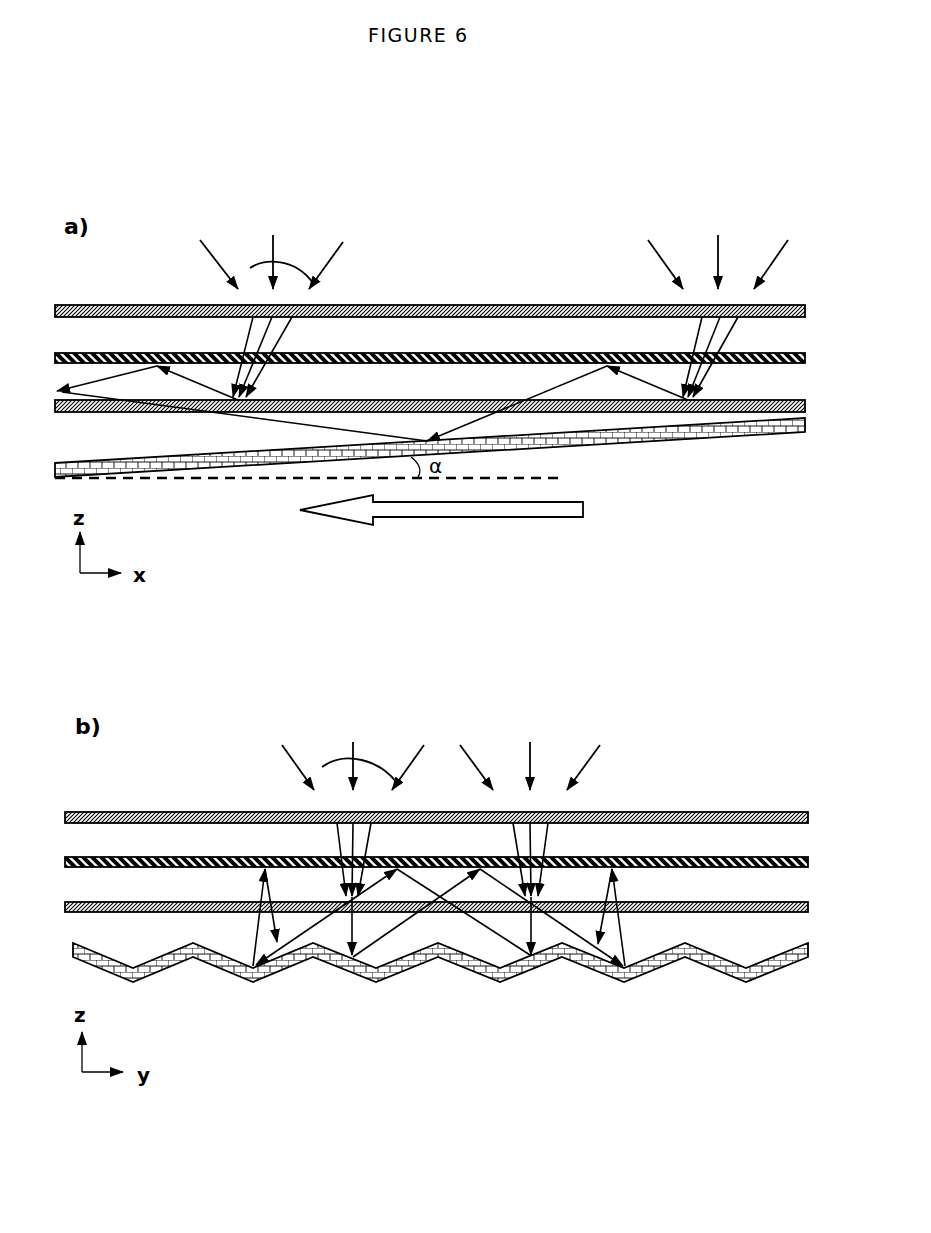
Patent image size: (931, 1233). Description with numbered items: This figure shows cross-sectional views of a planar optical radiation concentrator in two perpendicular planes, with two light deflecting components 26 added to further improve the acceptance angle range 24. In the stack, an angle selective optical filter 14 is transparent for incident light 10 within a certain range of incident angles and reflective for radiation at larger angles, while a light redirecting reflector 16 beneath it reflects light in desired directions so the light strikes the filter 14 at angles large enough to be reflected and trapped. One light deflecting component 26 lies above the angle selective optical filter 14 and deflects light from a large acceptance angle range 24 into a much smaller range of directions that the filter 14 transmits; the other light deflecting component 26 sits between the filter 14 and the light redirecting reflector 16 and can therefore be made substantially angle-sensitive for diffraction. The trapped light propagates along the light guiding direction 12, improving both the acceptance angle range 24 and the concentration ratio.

The incident light 10 is at (663, 268).
The light guiding direction 12 is at (455, 508).
The angle selective optical filter 14 is at (563, 353).
The light redirecting reflector 16 is at (153, 473).
The acceptance angle range 24 is at (250, 268).
The light deflecting component 26 is at (447, 313).